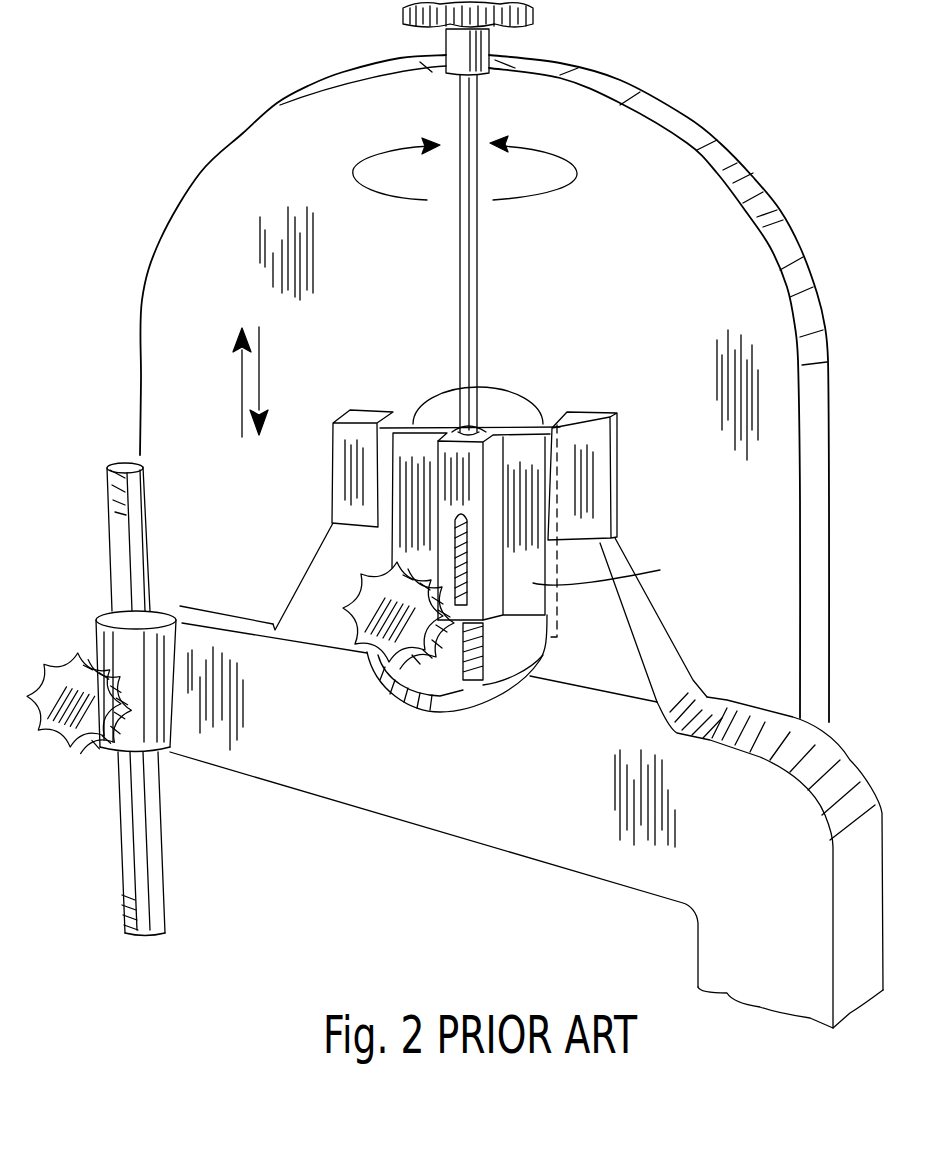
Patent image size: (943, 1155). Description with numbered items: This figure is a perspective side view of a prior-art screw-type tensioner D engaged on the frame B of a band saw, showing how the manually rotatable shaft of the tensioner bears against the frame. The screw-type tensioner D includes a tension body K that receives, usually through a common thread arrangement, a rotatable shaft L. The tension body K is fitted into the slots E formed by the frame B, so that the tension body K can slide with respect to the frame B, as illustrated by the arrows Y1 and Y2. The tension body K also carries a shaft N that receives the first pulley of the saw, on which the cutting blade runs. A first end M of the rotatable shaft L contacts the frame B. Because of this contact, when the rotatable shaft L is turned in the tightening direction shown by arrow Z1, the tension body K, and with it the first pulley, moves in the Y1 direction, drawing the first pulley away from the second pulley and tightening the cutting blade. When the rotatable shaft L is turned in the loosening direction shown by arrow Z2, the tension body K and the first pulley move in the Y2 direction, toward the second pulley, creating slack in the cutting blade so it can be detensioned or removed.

The frame B is at (545, 848).
The tension body K is at (640, 570).
The first end M is at (463, 682).
The screw-type tensioner D is at (407, 388).
The rotatable shaft L is at (482, 332).
The shaft N is at (493, 427).
The slots E is at (400, 430).
The tightening direction arrow Z1 is at (368, 152).
The loosening direction arrow Z2 is at (543, 192).
The Y1 direction arrow Y1 is at (238, 377).
The Y2 direction arrow Y2 is at (260, 357).